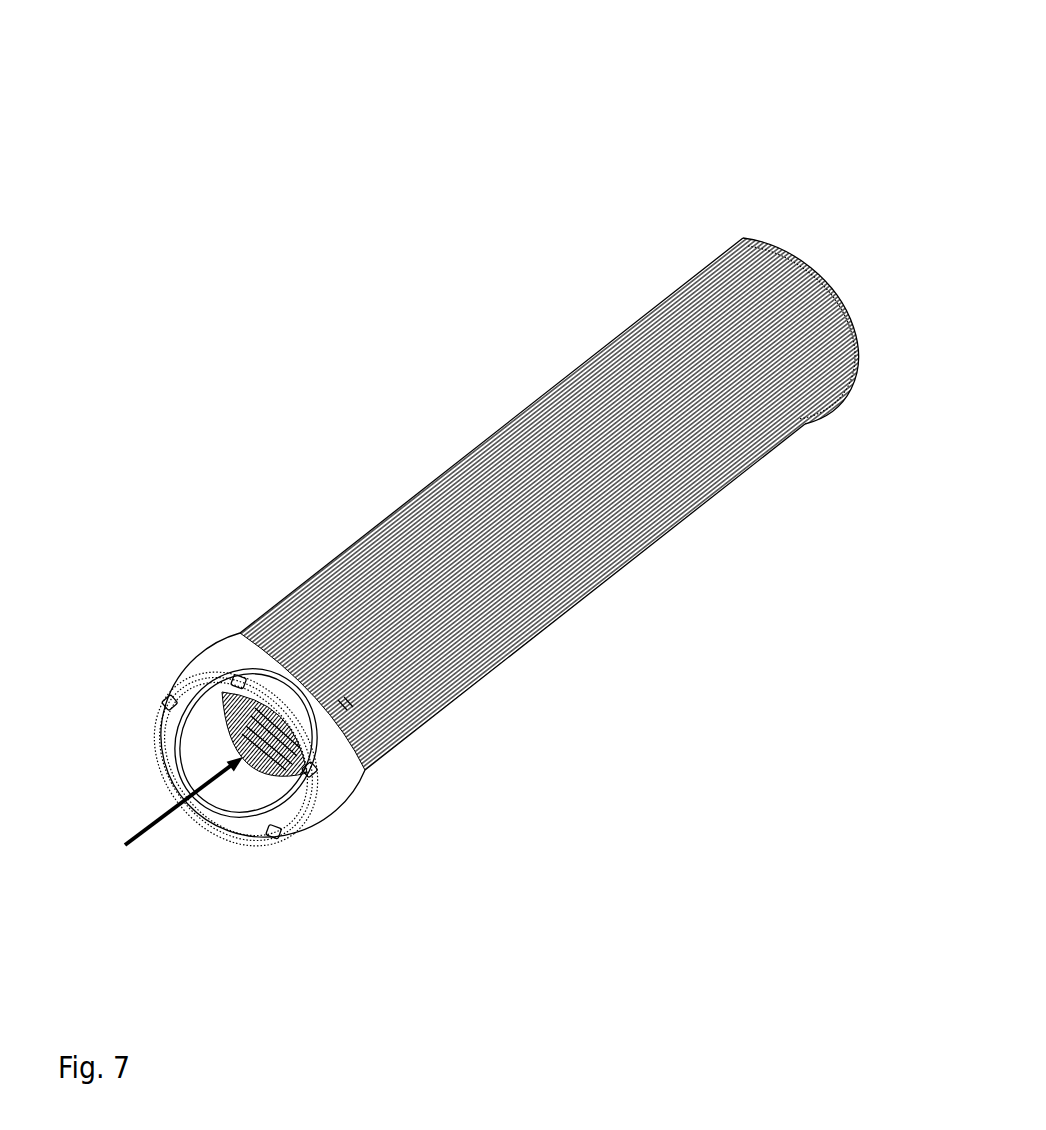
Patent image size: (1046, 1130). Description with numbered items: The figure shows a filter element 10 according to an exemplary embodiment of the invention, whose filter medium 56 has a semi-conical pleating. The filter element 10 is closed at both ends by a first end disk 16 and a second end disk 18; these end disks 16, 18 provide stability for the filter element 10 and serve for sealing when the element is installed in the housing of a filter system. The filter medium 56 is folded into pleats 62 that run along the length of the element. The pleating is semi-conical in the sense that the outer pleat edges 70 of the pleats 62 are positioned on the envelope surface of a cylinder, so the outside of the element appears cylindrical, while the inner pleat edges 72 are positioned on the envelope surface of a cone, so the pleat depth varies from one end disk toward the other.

The filter element 10 is at (700, 102).
The first end disk 16 is at (184, 668).
The second end disk 18 is at (803, 258).
The filter medium 56 is at (266, 586).
The pleats 62 is at (376, 514).
The outer pleat edges 70 is at (522, 650).
The inner pleat edges 72 is at (283, 772).